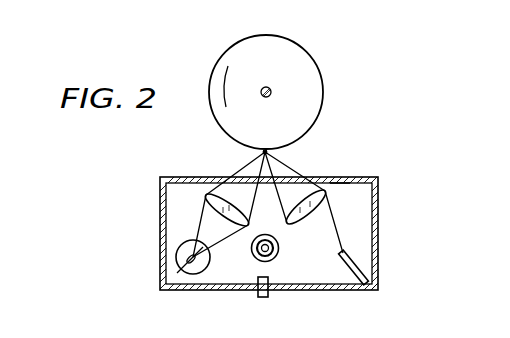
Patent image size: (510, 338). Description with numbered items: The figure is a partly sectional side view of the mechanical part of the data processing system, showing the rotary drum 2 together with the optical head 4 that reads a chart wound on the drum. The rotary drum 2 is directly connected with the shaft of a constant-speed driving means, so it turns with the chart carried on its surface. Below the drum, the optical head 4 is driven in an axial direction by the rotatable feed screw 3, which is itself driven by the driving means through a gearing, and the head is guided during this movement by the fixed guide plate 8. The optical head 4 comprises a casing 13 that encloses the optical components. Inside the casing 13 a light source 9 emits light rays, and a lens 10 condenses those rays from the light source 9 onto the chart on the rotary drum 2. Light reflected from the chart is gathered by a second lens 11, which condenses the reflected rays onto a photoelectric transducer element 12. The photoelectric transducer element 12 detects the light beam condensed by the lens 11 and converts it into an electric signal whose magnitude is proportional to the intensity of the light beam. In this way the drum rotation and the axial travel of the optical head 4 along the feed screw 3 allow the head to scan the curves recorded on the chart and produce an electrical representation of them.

The rotary drum 2 is at (314, 65).
The rotatable feed screw 3 is at (279, 252).
The optical head 4 is at (389, 203).
The fixed guide plate 8 is at (270, 293).
The light source 9 is at (205, 272).
The lens 10 is at (207, 195).
The lens 11 is at (325, 190).
The photoelectric transducer element 12 is at (360, 268).
The casing 13 is at (340, 177).